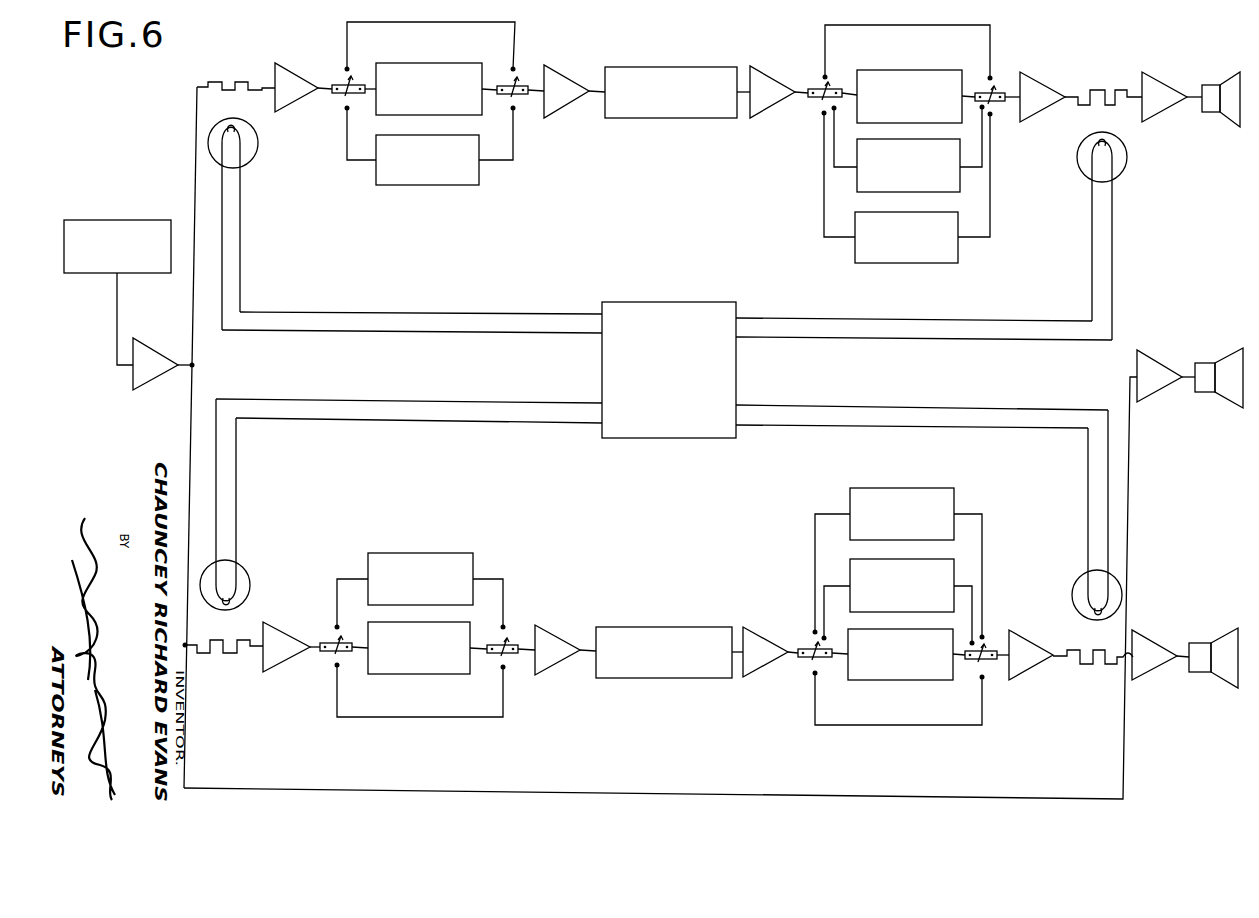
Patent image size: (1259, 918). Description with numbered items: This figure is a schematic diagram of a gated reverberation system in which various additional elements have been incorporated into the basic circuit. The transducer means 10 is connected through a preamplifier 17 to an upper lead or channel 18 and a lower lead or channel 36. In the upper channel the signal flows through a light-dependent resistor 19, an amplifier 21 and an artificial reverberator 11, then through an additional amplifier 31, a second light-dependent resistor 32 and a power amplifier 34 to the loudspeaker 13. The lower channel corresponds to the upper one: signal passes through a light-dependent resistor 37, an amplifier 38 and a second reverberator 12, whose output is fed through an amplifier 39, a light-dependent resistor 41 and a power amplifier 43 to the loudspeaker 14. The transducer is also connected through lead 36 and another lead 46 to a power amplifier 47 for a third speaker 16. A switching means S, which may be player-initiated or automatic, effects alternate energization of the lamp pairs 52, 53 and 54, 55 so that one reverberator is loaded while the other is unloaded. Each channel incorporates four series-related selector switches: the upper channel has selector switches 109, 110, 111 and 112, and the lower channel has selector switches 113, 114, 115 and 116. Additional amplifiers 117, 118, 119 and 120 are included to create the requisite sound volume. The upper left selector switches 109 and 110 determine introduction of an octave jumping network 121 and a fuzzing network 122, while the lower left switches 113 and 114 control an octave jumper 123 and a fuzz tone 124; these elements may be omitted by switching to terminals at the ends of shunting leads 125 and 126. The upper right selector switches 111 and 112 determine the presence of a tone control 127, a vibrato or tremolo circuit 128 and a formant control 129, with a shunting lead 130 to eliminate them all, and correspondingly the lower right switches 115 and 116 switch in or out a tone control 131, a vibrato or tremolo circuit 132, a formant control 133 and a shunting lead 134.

The transducer means 10 is at (100, 220).
The artificial reverberator 11 is at (668, 67).
The artificial reverberator 12 is at (628, 680).
The loudspeaker 13 is at (1232, 122).
The loudspeaker 14 is at (1226, 640).
The third speaker 16 is at (1221, 362).
The preamplifier 17 is at (150, 352).
The upper lead or channel 18 is at (194, 160).
The light-dependent resistor 19 is at (209, 81).
The amplifier 21 is at (560, 115).
The amplifier 31 is at (772, 68).
The light-dependent resistor 32 is at (1098, 90).
The power amplifier 34 is at (1168, 78).
The lower lead or channel 36 is at (190, 437).
The light-dependent resistor 37 is at (221, 655).
The amplifier 38 is at (556, 632).
The amplifier 39 is at (762, 636).
The light-dependent resistor 41 is at (1080, 665).
The power amplifier 43 is at (1150, 672).
The lead 46 is at (600, 793).
The power amplifier 47 is at (1166, 393).
The lamp 52 is at (258, 152).
The lamp 53 is at (1076, 582).
The lamp 54 is at (245, 572).
The lamp 55 is at (1124, 170).
The switching means S is at (738, 372).
The selector switch 109 is at (341, 95).
The selector switch 110 is at (518, 102).
The selector switch 111 is at (816, 104).
The selector switch 112 is at (995, 81).
The selector switch 113 is at (332, 656).
The selector switch 114 is at (512, 662).
The selector switch 115 is at (812, 662).
The selector switch 116 is at (993, 662).
The additional amplifier 117 is at (300, 68).
The additional amplifier 118 is at (1036, 118).
The additional amplifier 119 is at (288, 632).
The additional amplifier 120 is at (1030, 640).
The octave jumping network 121 is at (420, 63).
The fuzzing network 122 is at (430, 187).
The octave jumper 123 is at (420, 678).
The fuzz tone 124 is at (460, 553).
The shunting lead 125 is at (517, 25).
The shunting lead 126 is at (405, 718).
The tone control 127 is at (872, 70).
The vibrato or tremolo circuit 128 is at (857, 192).
The formant control 129 is at (948, 264).
The shunting lead 130 is at (826, 25).
The tone control 131 is at (882, 682).
The vibrato or tremolo circuit 132 is at (855, 563).
The formant control 133 is at (855, 488).
The shunting lead 134 is at (895, 727).